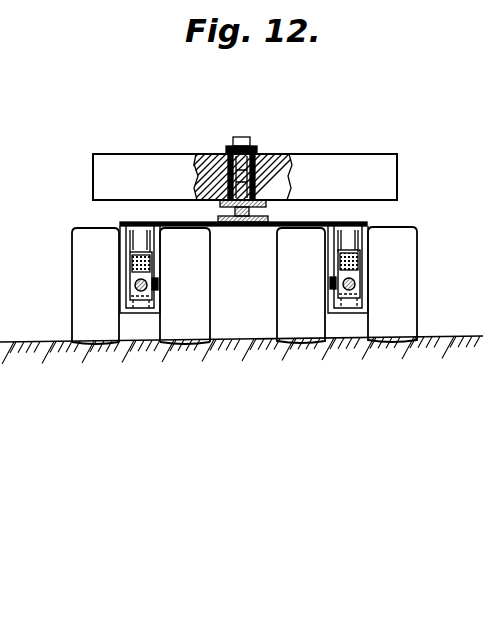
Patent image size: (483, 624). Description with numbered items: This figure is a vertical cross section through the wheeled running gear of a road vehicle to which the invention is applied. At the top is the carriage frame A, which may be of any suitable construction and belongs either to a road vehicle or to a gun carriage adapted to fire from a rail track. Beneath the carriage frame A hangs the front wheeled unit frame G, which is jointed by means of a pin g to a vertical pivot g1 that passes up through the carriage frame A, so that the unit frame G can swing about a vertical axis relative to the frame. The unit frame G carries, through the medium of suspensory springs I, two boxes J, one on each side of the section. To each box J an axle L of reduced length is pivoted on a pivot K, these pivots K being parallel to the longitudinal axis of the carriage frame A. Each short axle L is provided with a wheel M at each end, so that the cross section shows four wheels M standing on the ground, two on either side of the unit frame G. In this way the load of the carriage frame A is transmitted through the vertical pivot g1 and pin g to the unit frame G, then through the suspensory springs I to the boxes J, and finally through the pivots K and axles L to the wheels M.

The carriage frame A is at (166, 164).
The vertical pivot g1 is at (256, 152).
The front unit frame G is at (233, 223).
The pin g is at (243, 223).
The wheel M is at (80, 246).
The pivot K is at (128, 293).
The suspensory spring I is at (140, 265).
The box J is at (130, 284).
The axle L is at (156, 284).